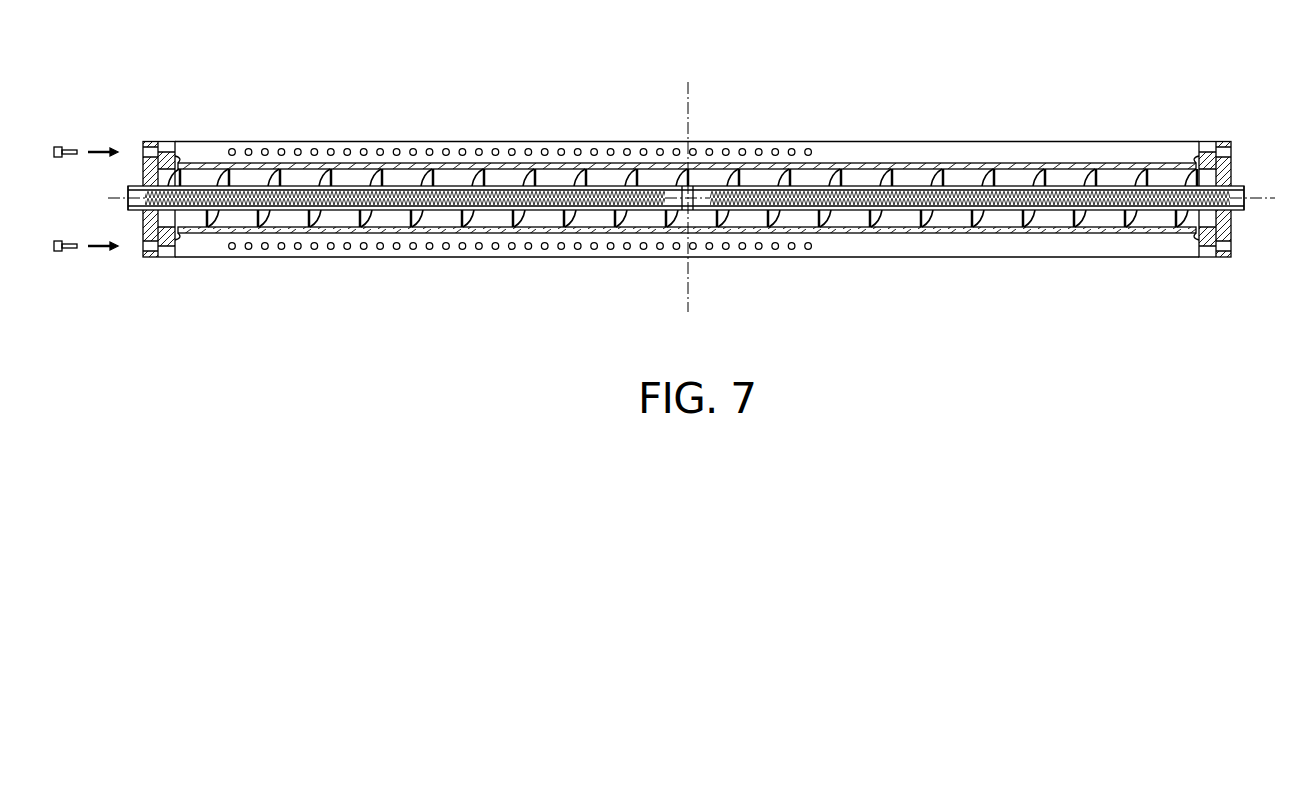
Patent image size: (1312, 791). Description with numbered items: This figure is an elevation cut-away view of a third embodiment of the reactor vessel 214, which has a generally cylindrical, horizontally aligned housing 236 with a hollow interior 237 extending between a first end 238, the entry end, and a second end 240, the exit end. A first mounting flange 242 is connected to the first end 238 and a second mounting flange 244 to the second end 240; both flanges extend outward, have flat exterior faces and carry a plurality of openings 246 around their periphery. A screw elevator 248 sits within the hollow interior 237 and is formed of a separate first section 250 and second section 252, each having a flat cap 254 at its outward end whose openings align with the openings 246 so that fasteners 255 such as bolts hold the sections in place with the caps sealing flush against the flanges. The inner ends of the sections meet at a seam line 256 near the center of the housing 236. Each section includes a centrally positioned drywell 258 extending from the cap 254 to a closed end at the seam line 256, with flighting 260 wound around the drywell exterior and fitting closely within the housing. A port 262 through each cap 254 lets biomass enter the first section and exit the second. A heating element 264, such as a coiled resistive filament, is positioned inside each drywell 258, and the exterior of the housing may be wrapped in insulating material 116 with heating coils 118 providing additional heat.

The reactor vessel 214 is at (487, 36).
The insulating material 116 is at (413, 258).
The heating coils 118 is at (528, 250).
The housing 236 is at (867, 233).
The hollow interior 237 is at (955, 222).
The first end 238 is at (1243, 284).
The second end 240 is at (133, 289).
The first mounting flange 242 is at (1208, 141).
The second mounting flange 244 is at (165, 141).
The openings 246 is at (177, 153).
The screw elevator 248 is at (712, 178).
The first section 250 is at (866, 190).
The second section 252 is at (463, 182).
The cap 254 is at (150, 141).
The fasteners 255 is at (66, 146).
The seam line 256 is at (690, 93).
The drywell 258 is at (130, 200).
The flighting 260 is at (272, 168).
The port 262 is at (143, 170).
The heating element 264 is at (337, 196).